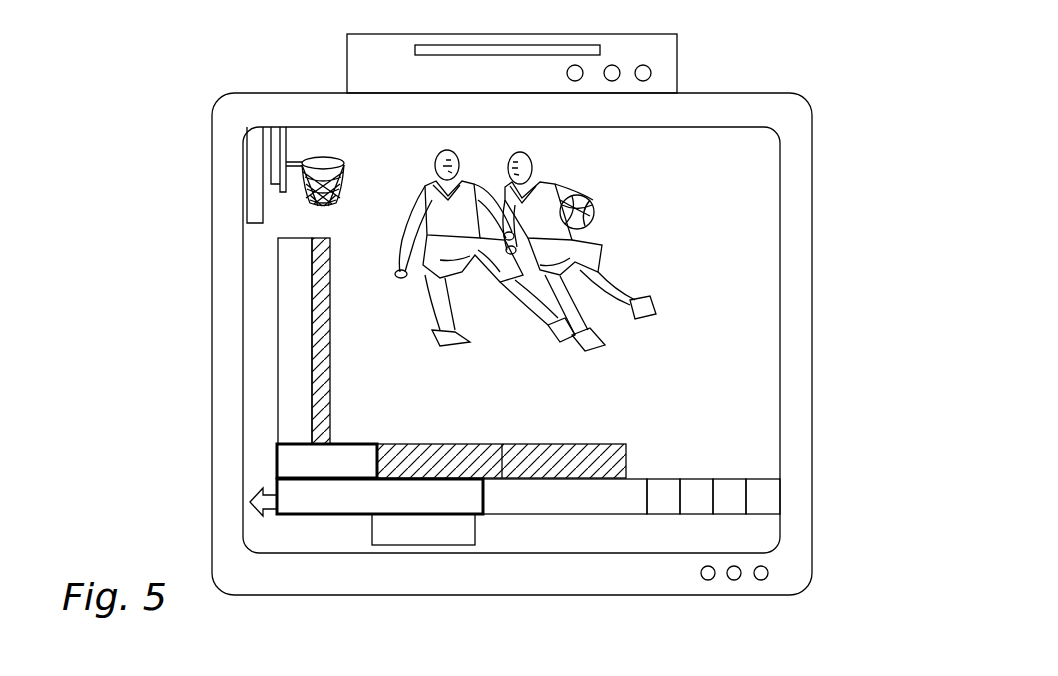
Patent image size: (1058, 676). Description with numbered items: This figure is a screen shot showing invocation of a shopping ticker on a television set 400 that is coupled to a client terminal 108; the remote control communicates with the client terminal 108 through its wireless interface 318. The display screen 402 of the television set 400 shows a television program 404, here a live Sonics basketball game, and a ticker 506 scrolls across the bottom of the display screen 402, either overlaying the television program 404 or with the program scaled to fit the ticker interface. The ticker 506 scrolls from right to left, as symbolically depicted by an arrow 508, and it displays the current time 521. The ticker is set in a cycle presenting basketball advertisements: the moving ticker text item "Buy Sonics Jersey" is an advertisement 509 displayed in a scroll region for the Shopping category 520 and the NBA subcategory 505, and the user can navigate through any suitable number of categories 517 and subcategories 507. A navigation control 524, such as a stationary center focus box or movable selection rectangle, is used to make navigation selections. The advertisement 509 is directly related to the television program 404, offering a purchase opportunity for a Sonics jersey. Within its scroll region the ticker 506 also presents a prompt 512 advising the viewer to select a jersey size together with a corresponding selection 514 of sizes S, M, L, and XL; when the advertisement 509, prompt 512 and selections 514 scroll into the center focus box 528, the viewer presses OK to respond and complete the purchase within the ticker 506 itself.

The client terminal 108 is at (347, 48).
The wireless interface 318 is at (652, 73).
The television set 400 is at (228, 123).
The display screen 402 is at (780, 193).
The television program 404 is at (690, 302).
The NBA subcategory 505 is at (277, 462).
The ticker 506 is at (738, 470).
The subcategories 507 is at (428, 443).
The arrow 508 is at (250, 506).
The advertisement 509 is at (279, 515).
The prompt 512 is at (503, 515).
The selection 514 is at (700, 514).
The categories 517 is at (280, 232).
The Shopping category 520 is at (278, 300).
The current time 521 is at (435, 546).
The navigation control 524 is at (358, 443).
The center focus box 528 is at (318, 515).